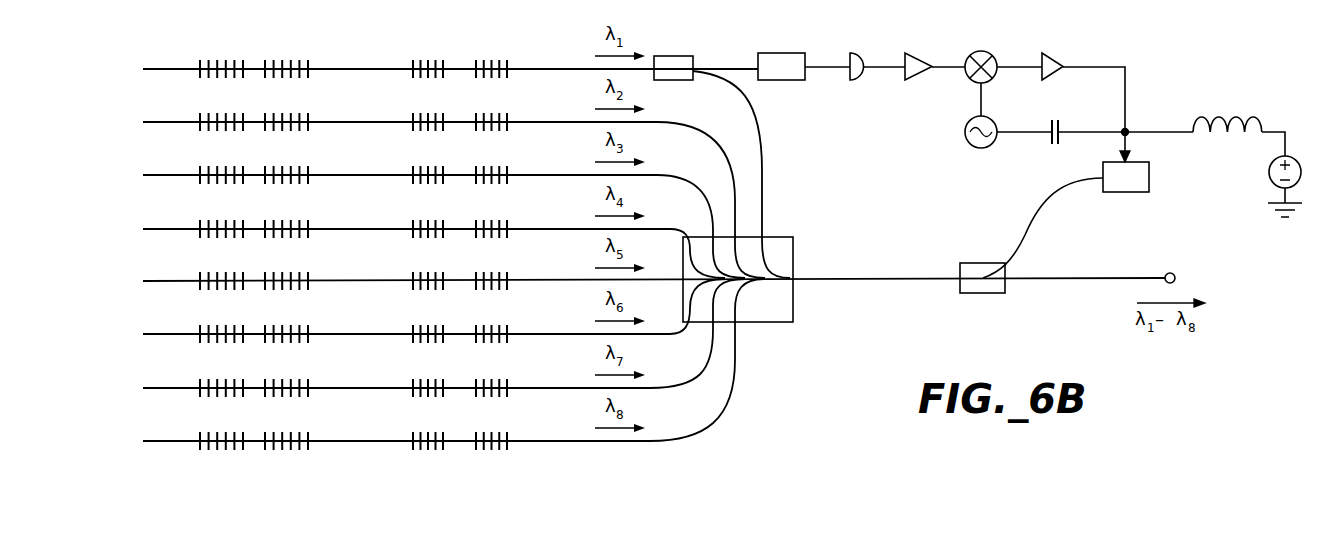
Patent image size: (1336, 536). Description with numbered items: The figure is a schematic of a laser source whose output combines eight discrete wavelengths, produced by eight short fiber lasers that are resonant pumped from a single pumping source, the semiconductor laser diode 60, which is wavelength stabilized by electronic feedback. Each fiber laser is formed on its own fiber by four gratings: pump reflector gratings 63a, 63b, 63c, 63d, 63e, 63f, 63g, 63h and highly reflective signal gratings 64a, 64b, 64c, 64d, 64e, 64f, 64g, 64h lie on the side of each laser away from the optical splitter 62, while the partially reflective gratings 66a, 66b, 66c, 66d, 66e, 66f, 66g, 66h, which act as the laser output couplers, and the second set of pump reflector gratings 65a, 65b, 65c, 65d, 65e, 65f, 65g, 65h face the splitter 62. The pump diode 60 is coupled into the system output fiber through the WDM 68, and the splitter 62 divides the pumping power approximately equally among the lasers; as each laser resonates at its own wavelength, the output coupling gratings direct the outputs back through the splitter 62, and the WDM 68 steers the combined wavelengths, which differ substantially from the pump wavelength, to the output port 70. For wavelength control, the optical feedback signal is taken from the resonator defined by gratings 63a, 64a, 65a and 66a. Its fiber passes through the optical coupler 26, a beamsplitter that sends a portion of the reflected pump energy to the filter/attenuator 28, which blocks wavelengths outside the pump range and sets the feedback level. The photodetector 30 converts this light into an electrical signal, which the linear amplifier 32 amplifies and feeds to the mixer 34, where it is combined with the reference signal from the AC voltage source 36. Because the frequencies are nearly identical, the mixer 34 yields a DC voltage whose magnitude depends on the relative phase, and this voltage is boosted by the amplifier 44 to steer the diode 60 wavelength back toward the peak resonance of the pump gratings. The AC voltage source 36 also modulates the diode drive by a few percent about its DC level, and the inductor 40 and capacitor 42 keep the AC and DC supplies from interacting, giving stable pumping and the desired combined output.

The optical coupler 26 is at (670, 55).
The filter/attenuator 28 is at (770, 81).
The photodetector 30 is at (853, 81).
The linear amplifier 32 is at (917, 80).
The mixer 34 is at (996, 77).
The AC voltage source 36 is at (980, 148).
The inductor 40 is at (1222, 113).
The capacitor 42 is at (1072, 146).
The amplifier 44 is at (1050, 80).
The semiconductor laser diode 60 is at (1122, 193).
The optical splitter 62 is at (750, 323).
The WDM 68 is at (995, 295).
The output port 70 is at (1165, 272).
The pump reflector grating 63a is at (217, 60).
The pump reflector grating 63b is at (217, 113).
The pump reflector grating 63c is at (217, 166).
The pump reflector grating 63d is at (217, 220).
The pump reflector grating 63e is at (217, 272).
The pump reflector grating 63f is at (217, 325).
The pump reflector grating 63g is at (217, 379).
The pump reflector grating 63h is at (217, 432).
The highly reflective grating 64a is at (302, 60).
The highly reflective grating 64b is at (302, 113).
The highly reflective grating 64c is at (302, 166).
The highly reflective grating 64d is at (302, 220).
The highly reflective grating 64e is at (302, 272).
The highly reflective grating 64f is at (302, 325).
The highly reflective grating 64g is at (302, 379).
The highly reflective grating 64h is at (302, 432).
The pump reflector grating 65a is at (497, 60).
The pump reflector grating 65b is at (497, 113).
The pump reflector grating 65c is at (497, 166).
The pump reflector grating 65d is at (497, 220).
The pump reflector grating 65e is at (497, 272).
The pump reflector grating 65f is at (497, 325).
The pump reflector grating 65g is at (497, 379).
The pump reflector grating 65h is at (497, 432).
The partially reflective grating 66a is at (430, 60).
The partially reflective grating 66b is at (430, 113).
The partially reflective grating 66c is at (430, 166).
The partially reflective grating 66d is at (430, 220).
The partially reflective grating 66e is at (430, 272).
The partially reflective grating 66f is at (430, 325).
The partially reflective grating 66g is at (430, 379).
The partially reflective grating 66h is at (430, 432).